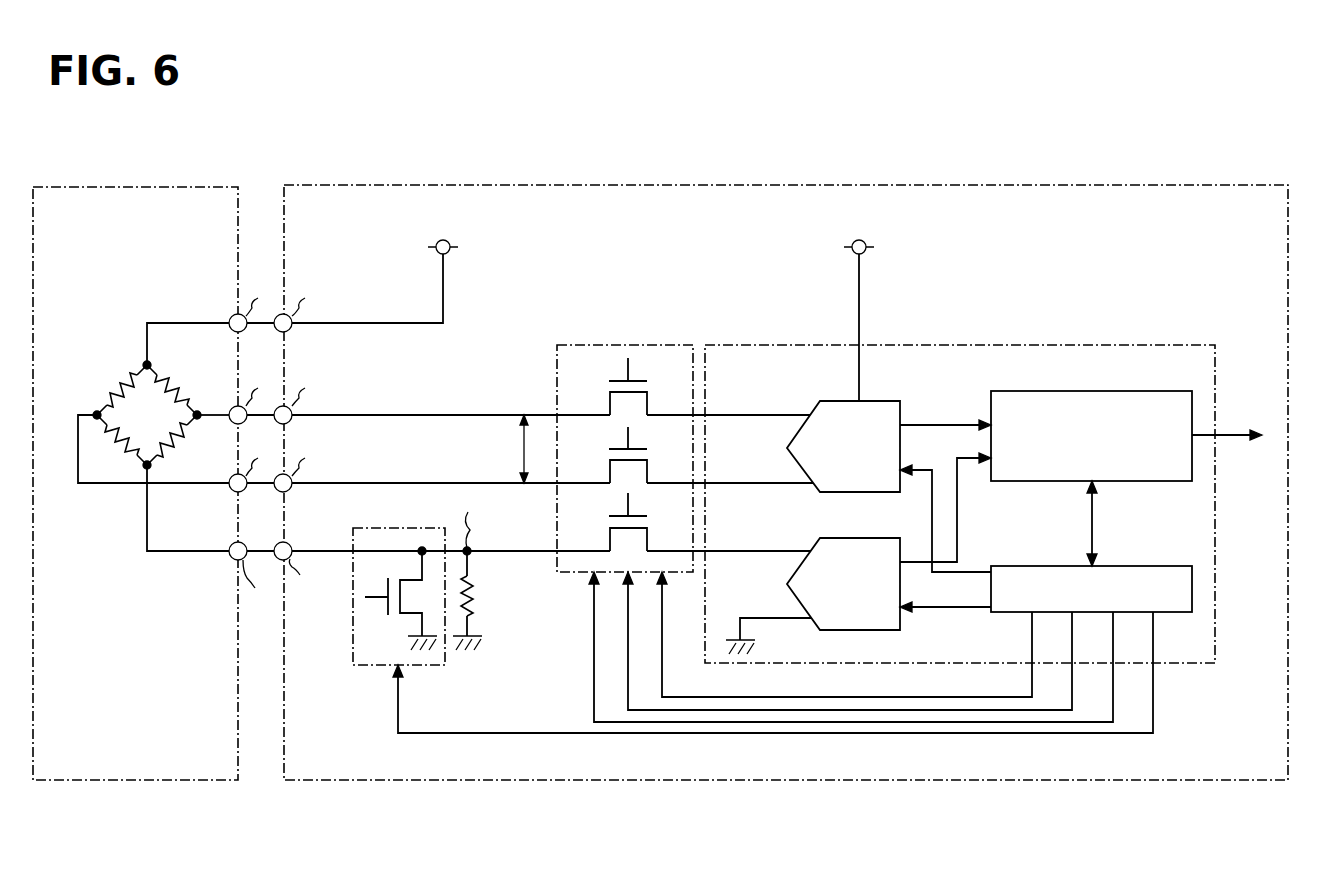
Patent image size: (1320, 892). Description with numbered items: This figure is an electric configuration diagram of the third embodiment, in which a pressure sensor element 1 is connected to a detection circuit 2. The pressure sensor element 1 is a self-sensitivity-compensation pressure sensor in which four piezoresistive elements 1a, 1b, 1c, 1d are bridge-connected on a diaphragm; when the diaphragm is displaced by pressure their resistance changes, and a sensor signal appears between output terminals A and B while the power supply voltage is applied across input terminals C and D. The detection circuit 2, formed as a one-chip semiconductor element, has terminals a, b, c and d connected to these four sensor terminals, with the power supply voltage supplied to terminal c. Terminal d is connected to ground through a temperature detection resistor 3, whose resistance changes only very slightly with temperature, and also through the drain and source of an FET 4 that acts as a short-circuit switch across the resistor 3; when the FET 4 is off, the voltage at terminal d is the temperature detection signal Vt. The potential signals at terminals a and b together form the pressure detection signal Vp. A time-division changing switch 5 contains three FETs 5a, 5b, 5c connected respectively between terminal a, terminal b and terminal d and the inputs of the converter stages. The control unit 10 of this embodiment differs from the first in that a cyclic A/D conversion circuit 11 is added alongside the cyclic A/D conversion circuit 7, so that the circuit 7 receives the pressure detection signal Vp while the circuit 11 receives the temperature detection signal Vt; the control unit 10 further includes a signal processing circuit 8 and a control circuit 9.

The pressure sensor element 1 is at (148, 187).
The piezoresistive element 1a is at (170, 390).
The piezoresistive element 1b is at (112, 386).
The piezoresistive element 1c is at (113, 454).
The piezoresistive element 1d is at (169, 440).
The detection circuit 2 is at (655, 185).
The temperature detection resistor 3 is at (475, 600).
The FET 4 is at (374, 613).
The time-division changing switch 5 is at (626, 345).
The FET 5a is at (658, 387).
The FET 5b is at (652, 471).
The FET 5c is at (650, 535).
The cyclic A/D conversion circuit 7 is at (902, 412).
The signal processing circuit 8 is at (1125, 390).
The control circuit 9 is at (1191, 566).
The control unit 10 is at (1064, 345).
The cyclic A/D conversion circuit 11 is at (904, 634).